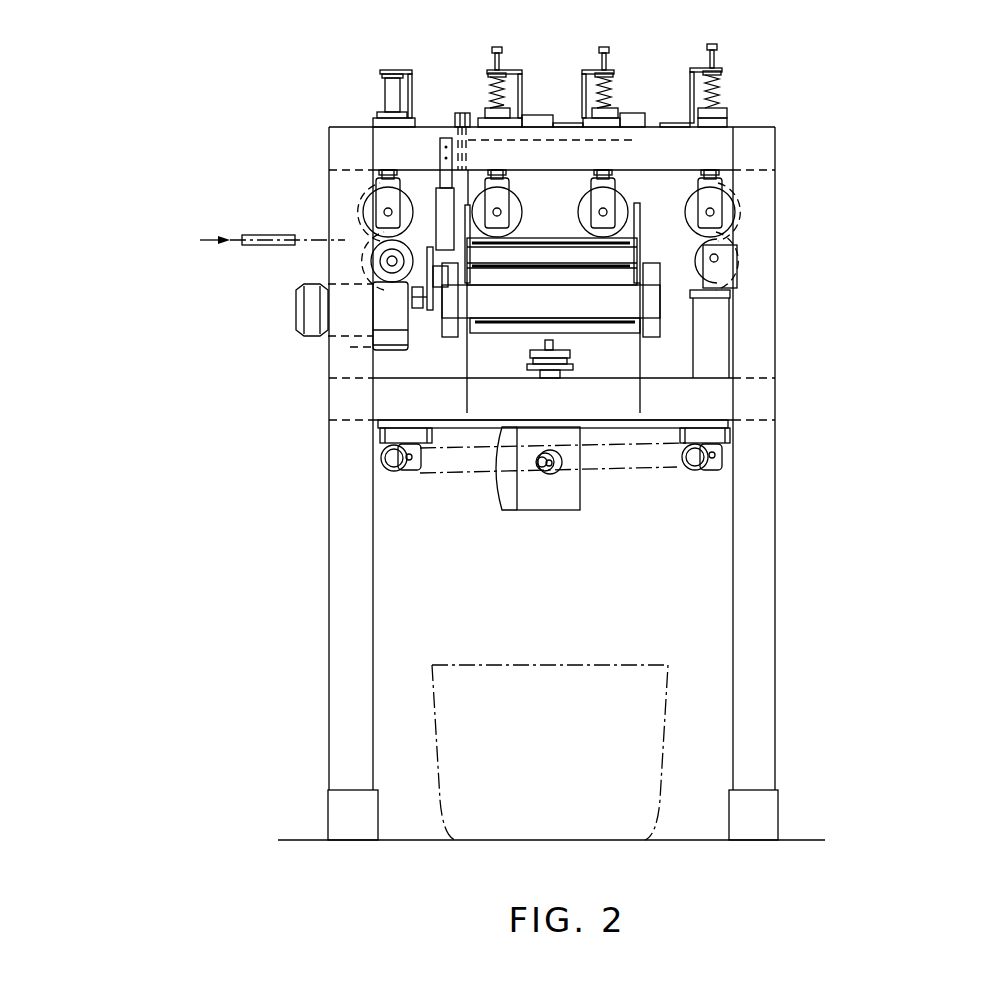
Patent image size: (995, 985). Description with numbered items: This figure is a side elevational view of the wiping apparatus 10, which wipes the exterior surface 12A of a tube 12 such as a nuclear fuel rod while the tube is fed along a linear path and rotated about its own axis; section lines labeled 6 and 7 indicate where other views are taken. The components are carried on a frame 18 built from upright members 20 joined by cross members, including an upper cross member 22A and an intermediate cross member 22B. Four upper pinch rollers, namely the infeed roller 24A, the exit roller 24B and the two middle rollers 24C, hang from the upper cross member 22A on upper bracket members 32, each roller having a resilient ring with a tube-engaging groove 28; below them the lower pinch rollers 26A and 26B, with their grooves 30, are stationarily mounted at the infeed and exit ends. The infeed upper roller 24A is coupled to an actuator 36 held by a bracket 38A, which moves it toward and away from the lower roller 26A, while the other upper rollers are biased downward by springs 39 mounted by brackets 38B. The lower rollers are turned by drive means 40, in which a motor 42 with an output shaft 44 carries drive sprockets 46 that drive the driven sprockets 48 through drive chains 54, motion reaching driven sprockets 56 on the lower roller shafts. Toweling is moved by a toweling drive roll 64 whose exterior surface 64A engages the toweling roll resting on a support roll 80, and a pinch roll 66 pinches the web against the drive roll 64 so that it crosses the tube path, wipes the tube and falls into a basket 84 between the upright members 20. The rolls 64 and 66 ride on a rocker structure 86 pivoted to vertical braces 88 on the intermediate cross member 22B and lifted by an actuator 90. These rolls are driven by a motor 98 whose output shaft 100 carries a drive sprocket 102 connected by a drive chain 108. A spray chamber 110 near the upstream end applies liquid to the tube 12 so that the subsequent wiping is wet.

The wiping apparatus 10 is at (804, 68).
The tube 12 is at (265, 248).
The exterior surface 12A is at (258, 234).
The frame 18 is at (782, 548).
The upright members 20 is at (348, 623).
The upper cross member 22A is at (720, 145).
The intermediate cross member 22B is at (453, 413).
The upper pinch roller 24A is at (387, 187).
The upper pinch roller 24B is at (736, 194).
The middle upper pinch rollers 24C is at (556, 191).
The lower pinch roller 26A is at (380, 247).
The lower pinch roller 26B is at (732, 242).
The tube-engaging groove 28 is at (373, 203).
The tube-engaging groove 30 is at (370, 253).
The upper bracket members 32 is at (380, 112).
The actuator 36 is at (383, 92).
The bracket 38A is at (400, 70).
The bracket 38B is at (580, 80).
The springs 39 is at (492, 105).
The drive means 40 is at (621, 486).
The motor 42 is at (503, 505).
The rotary output shaft 44 is at (565, 462).
The drive sprockets 46 is at (540, 475).
The driven sprockets 48 is at (382, 458).
The drive chains 54 is at (425, 470).
The driven sprockets 56 is at (388, 263).
The toweling drive roll 64 is at (643, 262).
The exterior surface 64A is at (641, 250).
The toweling pinch roll 66 is at (613, 277).
The support roll 80 is at (603, 303).
The basket 84 is at (595, 662).
The rocker structure 86 is at (521, 347).
The vertical braces 88 is at (457, 398).
The actuator 90 is at (552, 370).
The motor 98 is at (322, 340).
The rotary output shaft 100 is at (400, 290).
The drive sprocket 102 is at (434, 300).
The drive chain 108 is at (300, 322).
The spray chamber 110 is at (433, 190).
The section line 6- 6 is at (442, 110).
The section line 7- 7 is at (550, 205).